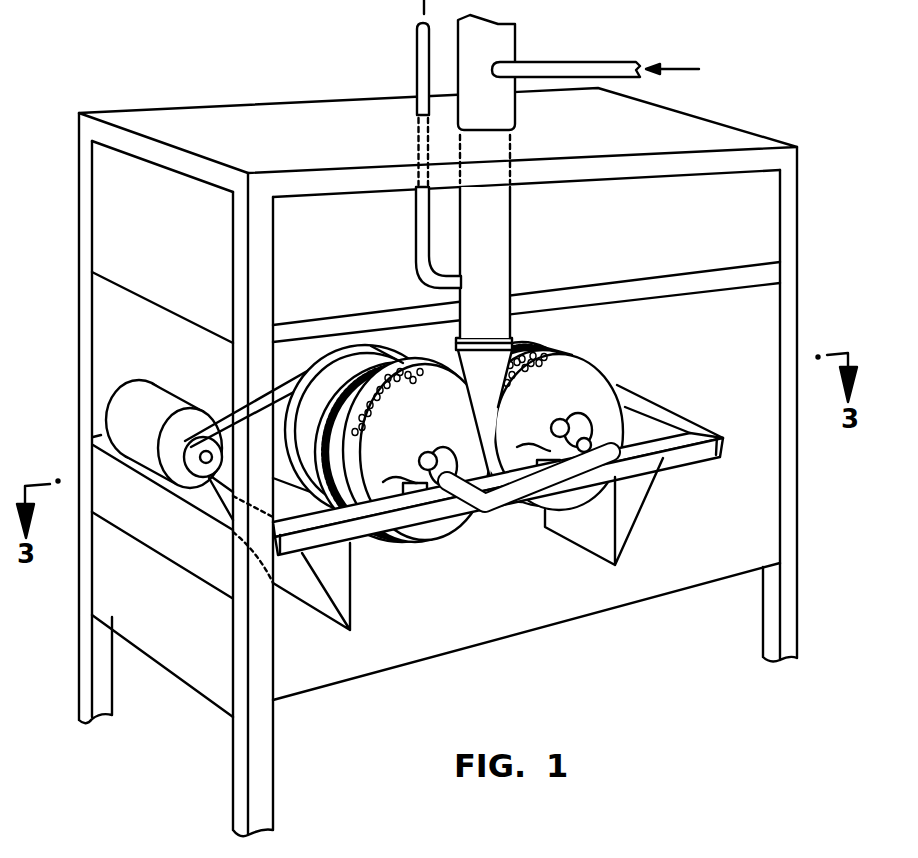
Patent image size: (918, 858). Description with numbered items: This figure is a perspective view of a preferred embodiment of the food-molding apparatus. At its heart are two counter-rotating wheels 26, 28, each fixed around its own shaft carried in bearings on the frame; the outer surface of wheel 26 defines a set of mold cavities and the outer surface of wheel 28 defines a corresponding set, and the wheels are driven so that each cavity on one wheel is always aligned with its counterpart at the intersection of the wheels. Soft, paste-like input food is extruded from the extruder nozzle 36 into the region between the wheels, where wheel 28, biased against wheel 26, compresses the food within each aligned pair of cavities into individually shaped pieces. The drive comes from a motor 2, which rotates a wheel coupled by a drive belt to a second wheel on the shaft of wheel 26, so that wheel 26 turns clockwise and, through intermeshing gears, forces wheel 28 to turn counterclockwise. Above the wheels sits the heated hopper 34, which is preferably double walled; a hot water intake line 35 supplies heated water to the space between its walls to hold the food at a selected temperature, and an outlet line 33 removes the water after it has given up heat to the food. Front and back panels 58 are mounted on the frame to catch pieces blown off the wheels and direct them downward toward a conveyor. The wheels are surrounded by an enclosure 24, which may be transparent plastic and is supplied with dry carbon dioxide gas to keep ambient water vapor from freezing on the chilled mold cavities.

The motor 2 is at (128, 413).
The enclosure 24 is at (82, 241).
The wheel 26 is at (413, 403).
The wheel 28 is at (580, 388).
The outlet line 33 is at (423, 51).
The heated hopper 34 is at (501, 222).
The hot water intake line 35 is at (576, 70).
The extruder nozzle 36 is at (490, 372).
The front and back panels 58 is at (352, 592).